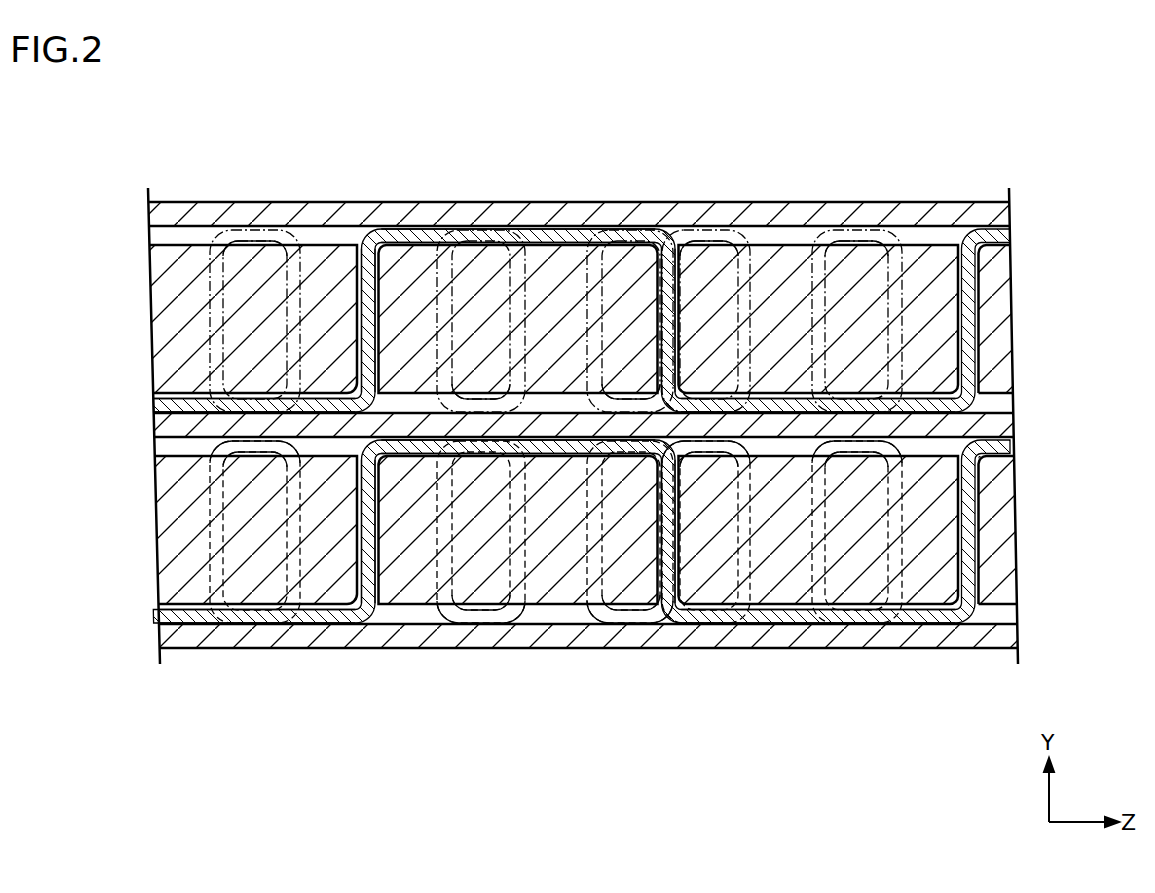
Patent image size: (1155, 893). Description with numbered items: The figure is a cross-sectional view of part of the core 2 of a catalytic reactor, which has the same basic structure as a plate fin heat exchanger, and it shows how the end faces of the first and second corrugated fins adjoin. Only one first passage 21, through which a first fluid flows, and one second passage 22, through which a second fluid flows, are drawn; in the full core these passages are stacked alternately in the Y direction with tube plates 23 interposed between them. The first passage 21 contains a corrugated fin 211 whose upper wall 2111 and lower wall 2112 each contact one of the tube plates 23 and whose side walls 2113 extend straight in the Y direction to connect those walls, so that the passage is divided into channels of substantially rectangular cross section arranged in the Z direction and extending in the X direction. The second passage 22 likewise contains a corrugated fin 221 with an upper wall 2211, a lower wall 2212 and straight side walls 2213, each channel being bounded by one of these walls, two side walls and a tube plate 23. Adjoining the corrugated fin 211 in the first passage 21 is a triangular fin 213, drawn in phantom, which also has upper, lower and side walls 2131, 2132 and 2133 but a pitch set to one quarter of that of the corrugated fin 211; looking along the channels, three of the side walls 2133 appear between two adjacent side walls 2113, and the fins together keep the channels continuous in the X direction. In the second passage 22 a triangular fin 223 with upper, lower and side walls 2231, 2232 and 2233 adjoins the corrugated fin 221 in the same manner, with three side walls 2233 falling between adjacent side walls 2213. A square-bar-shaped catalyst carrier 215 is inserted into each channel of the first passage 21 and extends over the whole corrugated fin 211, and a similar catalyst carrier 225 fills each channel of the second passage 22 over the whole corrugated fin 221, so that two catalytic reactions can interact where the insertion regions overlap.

The core 2 is at (1007, 135).
The first passage 21 is at (1042, 518).
The second passage 22 is at (1042, 307).
The tube plate 23 is at (998, 216).
The first corrugated fin 211 is at (849, 618).
The upper wall 2111 is at (391, 450).
The lower wall 2112 is at (166, 616).
The side wall 2113 is at (367, 528).
The triangular fin 213 is at (497, 622).
The upper wall 2131 is at (257, 450).
The lower wall 2132 is at (455, 613).
The side wall 2133 is at (440, 523).
The catalyst carrier 215 is at (930, 606).
The corrugated fin 221 is at (628, 232).
The upper wall 2211 is at (455, 233).
The lower wall 2212 is at (166, 405).
The side wall 2213 is at (360, 296).
The triangular fin 223 is at (858, 233).
The upper wall 2231 is at (257, 228).
The lower wall 2232 is at (481, 404).
The side wall 2233 is at (287, 277).
The catalyst carrier 225 is at (928, 245).